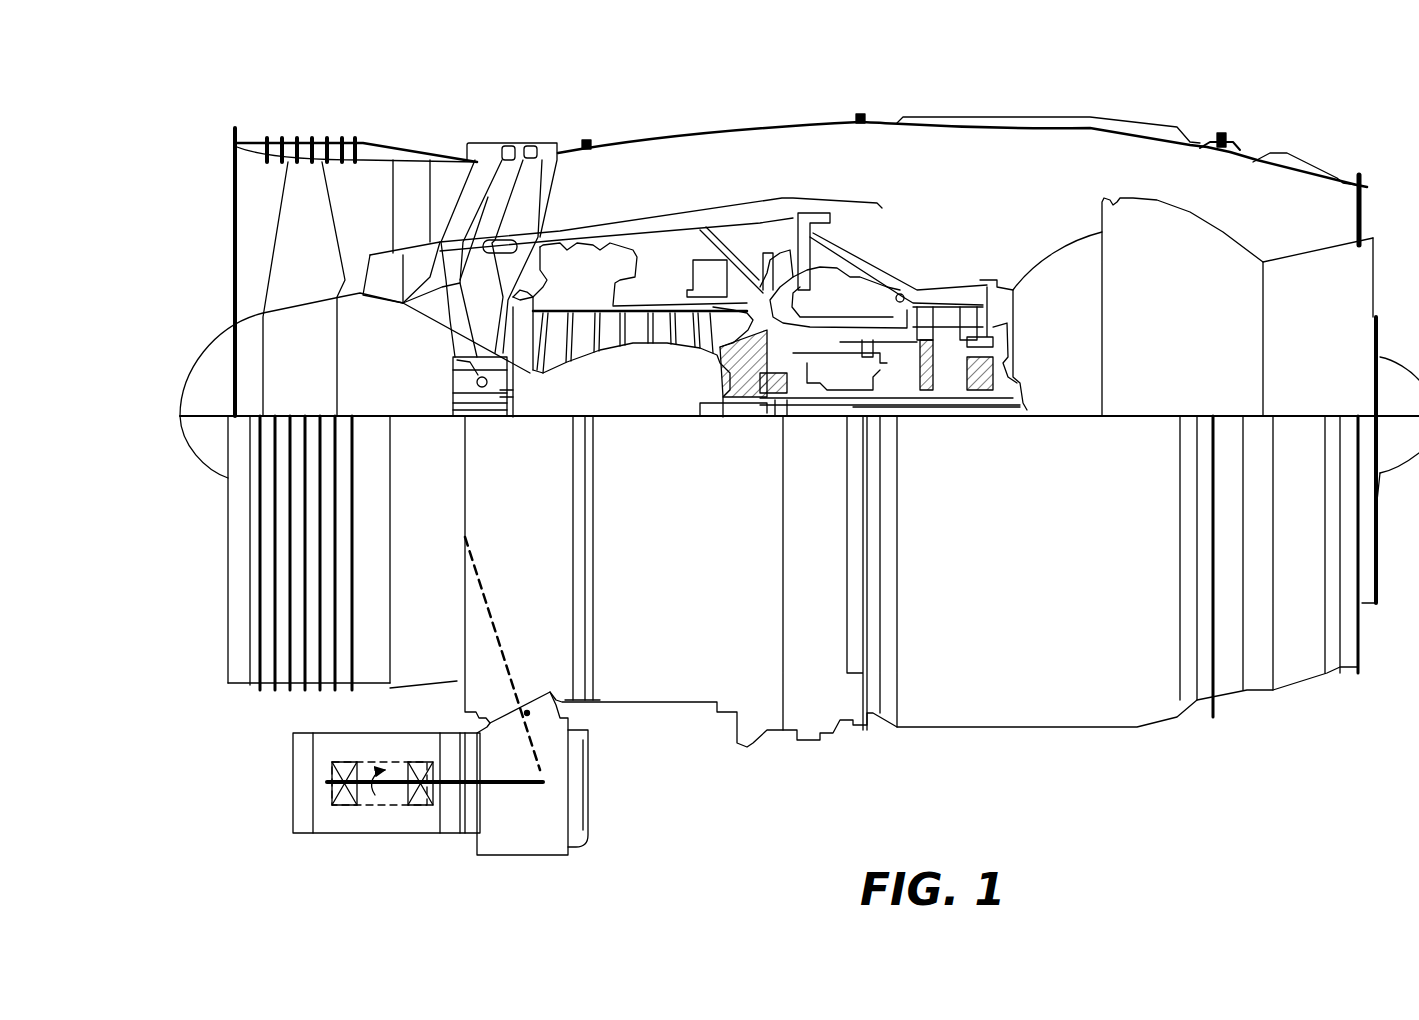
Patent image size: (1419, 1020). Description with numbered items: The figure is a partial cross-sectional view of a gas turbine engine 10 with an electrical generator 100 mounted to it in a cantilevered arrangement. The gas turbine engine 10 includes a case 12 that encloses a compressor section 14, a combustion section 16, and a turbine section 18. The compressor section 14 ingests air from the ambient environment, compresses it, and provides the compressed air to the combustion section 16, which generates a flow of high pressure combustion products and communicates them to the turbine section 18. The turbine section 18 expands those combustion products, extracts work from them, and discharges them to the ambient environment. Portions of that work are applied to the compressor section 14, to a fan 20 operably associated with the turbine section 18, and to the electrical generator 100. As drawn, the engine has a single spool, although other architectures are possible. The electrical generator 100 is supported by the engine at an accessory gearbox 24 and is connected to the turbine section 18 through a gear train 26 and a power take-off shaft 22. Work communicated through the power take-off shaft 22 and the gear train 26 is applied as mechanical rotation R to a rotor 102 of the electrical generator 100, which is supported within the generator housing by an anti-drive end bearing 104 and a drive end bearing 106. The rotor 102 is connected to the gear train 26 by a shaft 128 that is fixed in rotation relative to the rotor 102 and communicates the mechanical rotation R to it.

The gas turbine engine 10 is at (1232, 792).
The case 12 is at (1015, 688).
The compressor section 14 is at (622, 108).
The combustion section 16 is at (853, 90).
The turbine section 18 is at (984, 86).
The fan 20 is at (297, 290).
The power take-off shaft 22 is at (503, 653).
The accessory gearbox 24 is at (520, 833).
The gear train 26 is at (537, 747).
The electrical generator 100 is at (373, 800).
The rotor 102 is at (363, 762).
The anti-drive end bearing 104 is at (327, 805).
The drive end bearing 106 is at (417, 803).
The shaft 128 is at (453, 787).
The mechanical rotation R is at (362, 845).